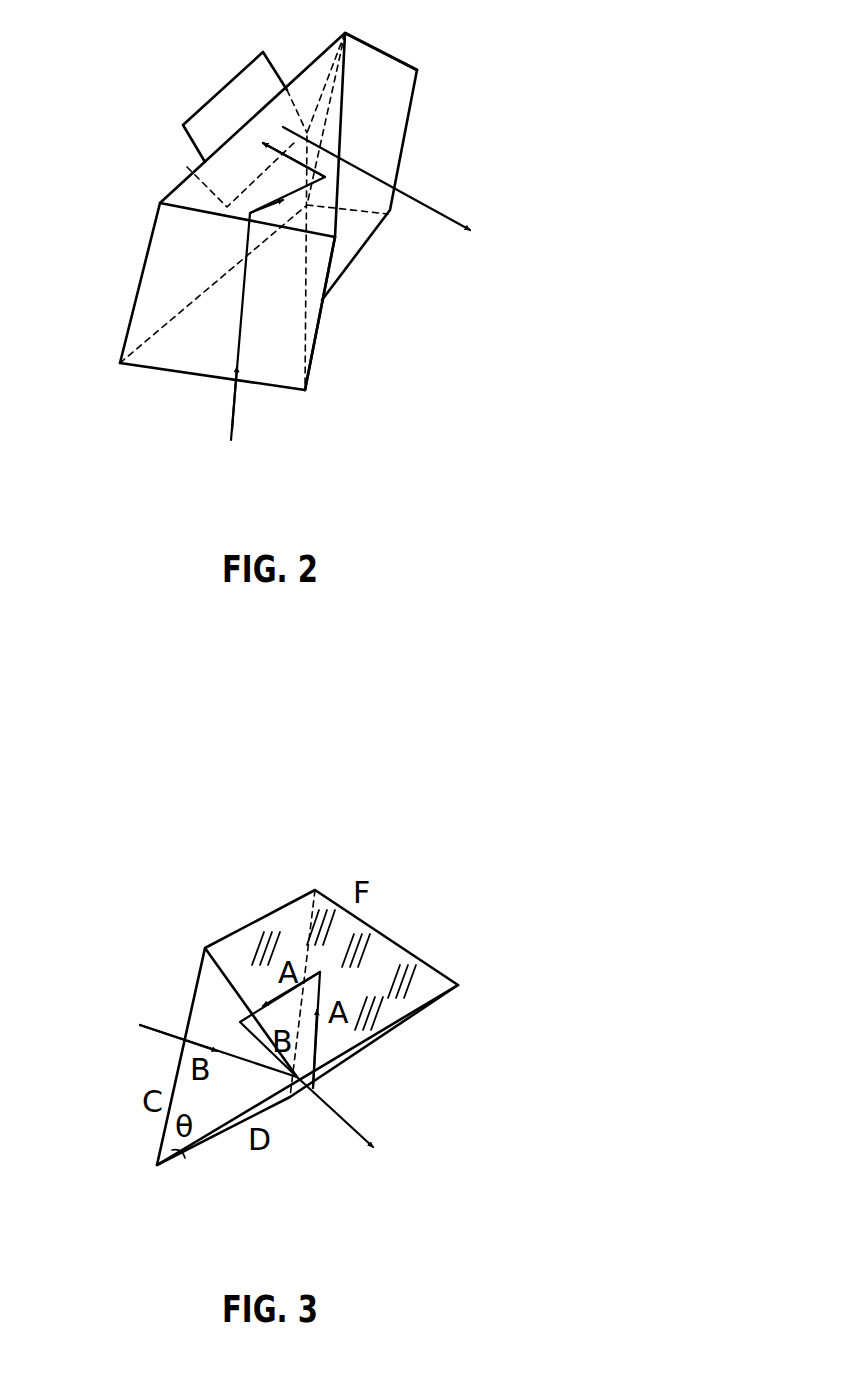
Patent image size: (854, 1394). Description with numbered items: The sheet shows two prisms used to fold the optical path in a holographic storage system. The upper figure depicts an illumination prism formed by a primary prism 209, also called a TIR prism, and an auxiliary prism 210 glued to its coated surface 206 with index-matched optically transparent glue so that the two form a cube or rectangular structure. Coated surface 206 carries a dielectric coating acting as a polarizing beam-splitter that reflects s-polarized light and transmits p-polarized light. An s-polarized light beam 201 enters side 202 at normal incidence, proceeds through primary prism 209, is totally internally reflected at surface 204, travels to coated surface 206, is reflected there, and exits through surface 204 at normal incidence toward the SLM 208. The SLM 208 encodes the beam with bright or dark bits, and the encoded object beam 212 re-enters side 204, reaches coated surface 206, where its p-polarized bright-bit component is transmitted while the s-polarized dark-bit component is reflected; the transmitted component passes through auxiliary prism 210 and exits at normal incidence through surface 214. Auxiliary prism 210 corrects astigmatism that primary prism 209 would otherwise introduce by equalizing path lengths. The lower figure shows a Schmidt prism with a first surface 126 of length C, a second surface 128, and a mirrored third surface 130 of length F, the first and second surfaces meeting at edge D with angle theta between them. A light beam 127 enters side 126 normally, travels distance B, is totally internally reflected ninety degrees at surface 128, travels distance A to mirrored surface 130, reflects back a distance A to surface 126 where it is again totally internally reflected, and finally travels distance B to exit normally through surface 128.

In FIG. 2, the light beam 201 is at (230, 432).
In FIG. 2, the side 202 is at (177, 365).
In FIG. 2, the surface 204 is at (187, 167).
In FIG. 2, the coated surface 206 is at (318, 342).
In FIG. 2, the SLM 208 is at (222, 85).
In FIG. 2, the primary prism 209 is at (142, 258).
In FIG. 2, the auxiliary prism 210 is at (383, 48).
In FIG. 2, the encoded object beam 212 is at (440, 213).
In FIG. 2, the surface 214 is at (392, 140).
In FIG. 3, the first surface 126 is at (277, 917).
In FIG. 3, the light beam 127 is at (150, 1025).
In FIG. 3, the second surface 128 is at (370, 1042).
In FIG. 3, the third surface 130 is at (383, 947).